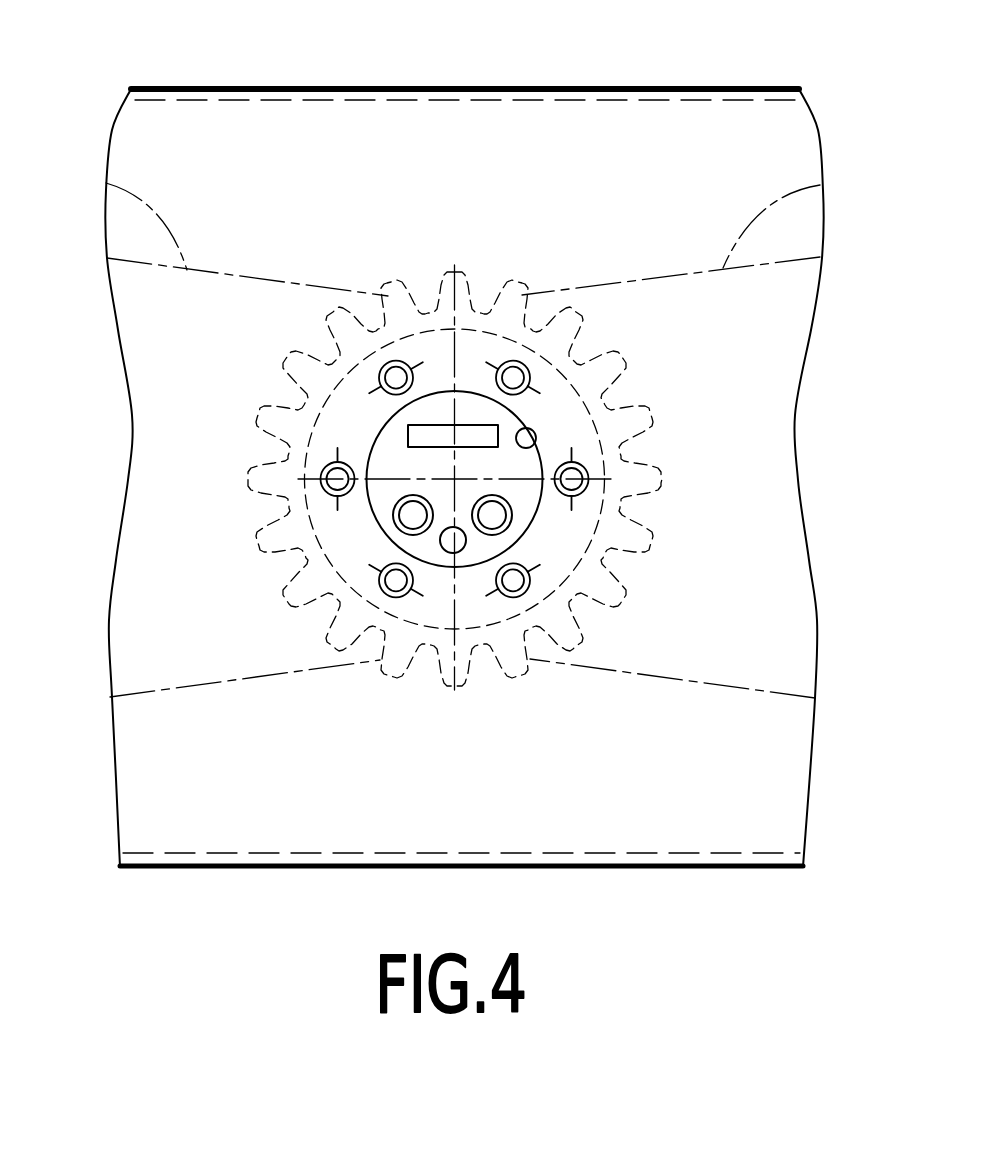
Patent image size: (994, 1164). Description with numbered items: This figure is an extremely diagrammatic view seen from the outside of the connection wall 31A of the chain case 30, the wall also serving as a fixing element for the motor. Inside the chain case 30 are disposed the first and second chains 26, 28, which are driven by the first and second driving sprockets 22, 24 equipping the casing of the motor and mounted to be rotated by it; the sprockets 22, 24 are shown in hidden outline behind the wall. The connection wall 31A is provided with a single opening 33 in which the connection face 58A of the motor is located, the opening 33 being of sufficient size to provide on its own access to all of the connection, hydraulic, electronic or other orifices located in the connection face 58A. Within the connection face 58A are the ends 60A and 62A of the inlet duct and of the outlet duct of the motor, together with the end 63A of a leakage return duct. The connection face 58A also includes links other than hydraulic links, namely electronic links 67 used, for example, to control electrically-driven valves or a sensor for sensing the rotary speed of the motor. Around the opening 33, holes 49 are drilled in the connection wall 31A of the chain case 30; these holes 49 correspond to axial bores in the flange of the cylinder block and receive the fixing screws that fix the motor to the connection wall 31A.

The first driving sprocket 22 is at (463, 353).
The second driving sprocket 24 is at (421, 268).
The first chain 26 is at (106, 183).
The second chain 28 is at (820, 185).
The chain case 30 is at (538, 86).
The connection wall 31A is at (672, 118).
The opening 33 is at (535, 450).
The holes 49 is at (521, 362).
The connection face 58A is at (387, 447).
The end of the inlet duct 60A is at (510, 519).
The end of the outlet duct 62A is at (398, 523).
The end of a leakage return duct 63A is at (452, 542).
The electronic links 67 is at (462, 425).